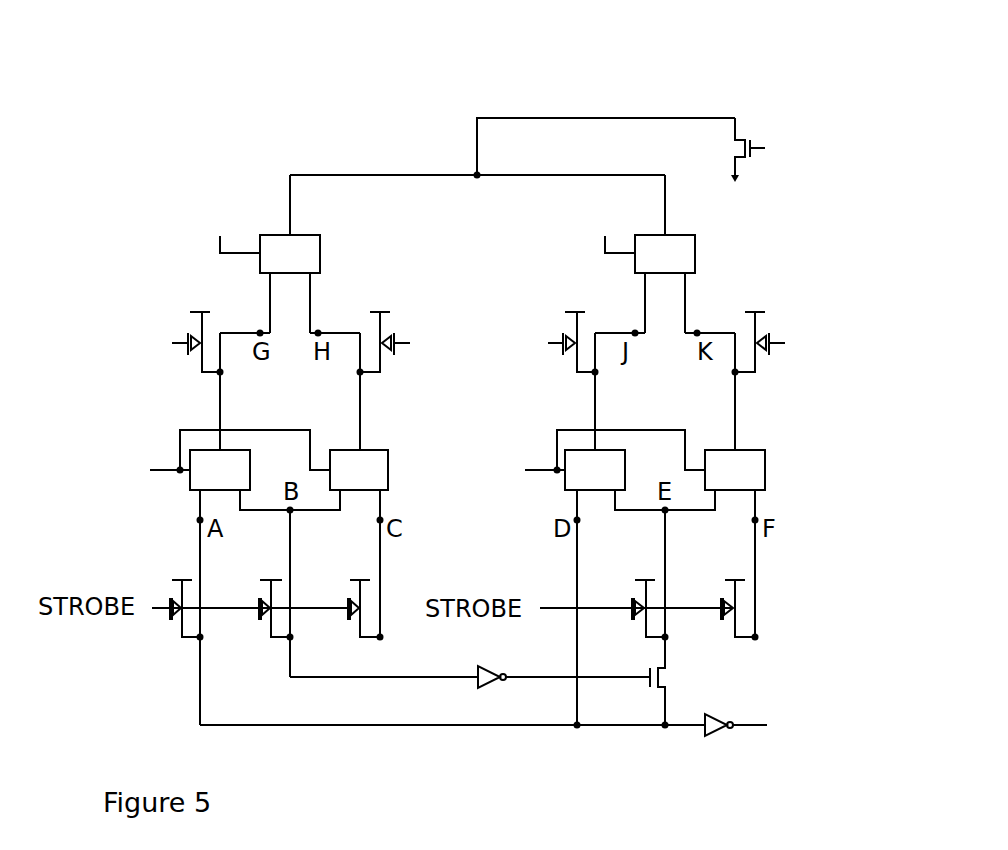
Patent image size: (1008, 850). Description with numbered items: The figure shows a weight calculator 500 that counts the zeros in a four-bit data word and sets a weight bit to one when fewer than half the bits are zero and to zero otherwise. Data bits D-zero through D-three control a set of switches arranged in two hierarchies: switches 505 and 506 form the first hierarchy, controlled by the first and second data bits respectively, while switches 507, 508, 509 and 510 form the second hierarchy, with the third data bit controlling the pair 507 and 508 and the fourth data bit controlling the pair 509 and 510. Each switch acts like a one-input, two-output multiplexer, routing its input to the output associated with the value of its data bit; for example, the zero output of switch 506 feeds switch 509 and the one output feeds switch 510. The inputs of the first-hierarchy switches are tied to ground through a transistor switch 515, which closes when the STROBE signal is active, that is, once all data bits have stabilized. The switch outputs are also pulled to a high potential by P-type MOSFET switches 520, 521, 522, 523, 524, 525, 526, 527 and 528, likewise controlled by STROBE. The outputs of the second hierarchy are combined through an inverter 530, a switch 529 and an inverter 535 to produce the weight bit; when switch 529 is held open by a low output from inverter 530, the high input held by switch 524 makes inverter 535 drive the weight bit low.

The weight calculator 500 is at (146, 73).
The switch 505 is at (320, 262).
The switch 506 is at (695, 262).
The switch 507 is at (250, 472).
The switch 508 is at (388, 472).
The switch 509 is at (625, 472).
The switch 510 is at (765, 472).
The switch 515 is at (742, 133).
The switch 520 is at (197, 357).
The switch 521 is at (397, 328).
The switch 522 is at (562, 358).
The switch 523 is at (772, 331).
The switch 524 is at (172, 625).
The switch 525 is at (262, 625).
The switch 526 is at (352, 625).
The switch 527 is at (640, 625).
The switch 528 is at (727, 625).
The switch 529 is at (660, 692).
The inverter 530 is at (478, 683).
The inverter 535 is at (705, 735).